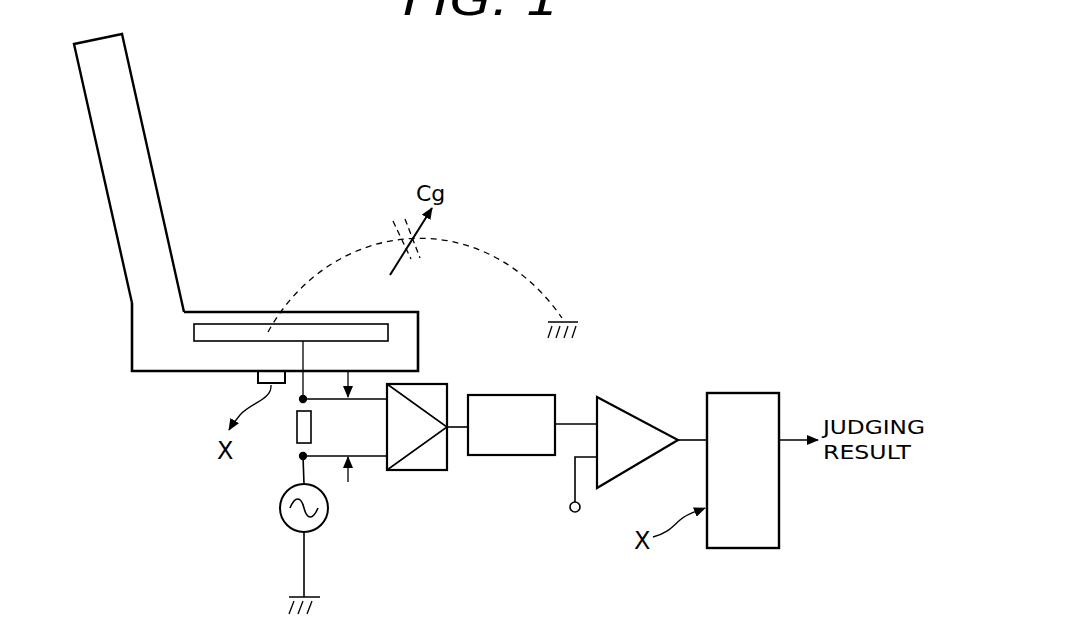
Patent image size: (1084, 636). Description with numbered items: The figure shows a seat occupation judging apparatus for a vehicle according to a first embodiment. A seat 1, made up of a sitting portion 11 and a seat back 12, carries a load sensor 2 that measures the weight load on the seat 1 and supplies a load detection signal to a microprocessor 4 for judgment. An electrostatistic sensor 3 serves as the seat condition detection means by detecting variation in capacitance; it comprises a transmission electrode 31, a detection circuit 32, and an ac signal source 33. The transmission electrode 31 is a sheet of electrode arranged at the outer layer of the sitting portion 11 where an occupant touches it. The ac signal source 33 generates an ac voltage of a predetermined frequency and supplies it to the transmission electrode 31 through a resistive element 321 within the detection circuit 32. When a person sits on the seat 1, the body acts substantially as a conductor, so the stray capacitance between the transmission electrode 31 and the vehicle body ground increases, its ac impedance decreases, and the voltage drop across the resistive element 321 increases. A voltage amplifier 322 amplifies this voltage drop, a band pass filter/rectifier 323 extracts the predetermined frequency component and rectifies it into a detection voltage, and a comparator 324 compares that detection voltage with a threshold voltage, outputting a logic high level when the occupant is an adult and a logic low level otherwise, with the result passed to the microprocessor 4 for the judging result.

The seat 1 is at (230, 234).
The sitting portion 11 is at (157, 360).
The seat back 12 is at (113, 180).
The load sensor 2 is at (258, 374).
The electrostatistic sensor 3 is at (455, 453).
The transmission electrode 31 is at (220, 333).
The detection circuit 32 is at (455, 469).
The resistive element 321 is at (297, 428).
The voltage amplifier 322 is at (415, 471).
The band pass filter/rectifier 323 is at (508, 395).
The comparator 324 is at (640, 418).
The ac signal source 33 is at (324, 520).
The microprocessor 4 is at (745, 393).